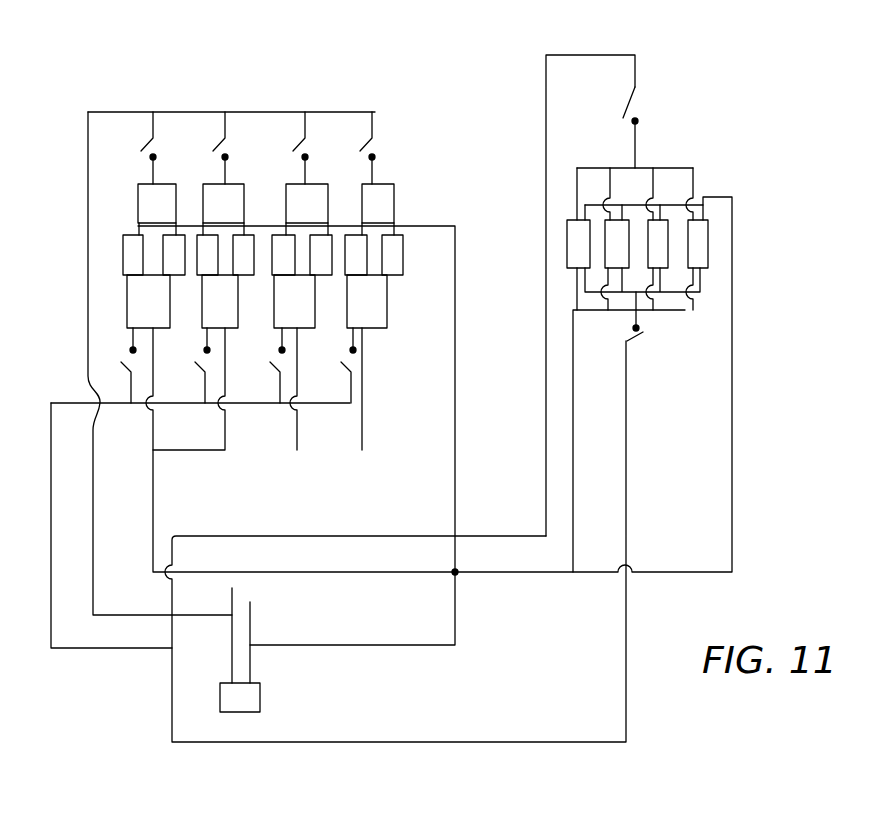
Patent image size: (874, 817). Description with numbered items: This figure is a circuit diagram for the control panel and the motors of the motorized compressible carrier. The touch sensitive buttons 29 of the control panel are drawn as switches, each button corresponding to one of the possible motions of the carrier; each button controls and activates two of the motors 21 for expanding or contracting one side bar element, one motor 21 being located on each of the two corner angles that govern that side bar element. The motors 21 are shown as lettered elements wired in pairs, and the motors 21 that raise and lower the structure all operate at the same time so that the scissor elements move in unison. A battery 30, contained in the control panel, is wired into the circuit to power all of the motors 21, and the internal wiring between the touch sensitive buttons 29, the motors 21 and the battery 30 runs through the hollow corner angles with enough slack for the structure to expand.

The touch sensitive button 29 is at (218, 147).
The motor 21 is at (404, 262).
The battery 30 is at (232, 655).